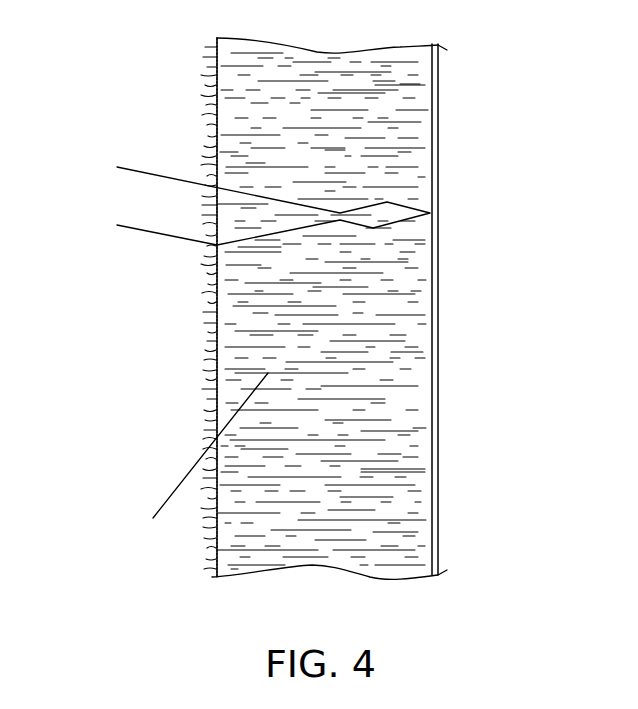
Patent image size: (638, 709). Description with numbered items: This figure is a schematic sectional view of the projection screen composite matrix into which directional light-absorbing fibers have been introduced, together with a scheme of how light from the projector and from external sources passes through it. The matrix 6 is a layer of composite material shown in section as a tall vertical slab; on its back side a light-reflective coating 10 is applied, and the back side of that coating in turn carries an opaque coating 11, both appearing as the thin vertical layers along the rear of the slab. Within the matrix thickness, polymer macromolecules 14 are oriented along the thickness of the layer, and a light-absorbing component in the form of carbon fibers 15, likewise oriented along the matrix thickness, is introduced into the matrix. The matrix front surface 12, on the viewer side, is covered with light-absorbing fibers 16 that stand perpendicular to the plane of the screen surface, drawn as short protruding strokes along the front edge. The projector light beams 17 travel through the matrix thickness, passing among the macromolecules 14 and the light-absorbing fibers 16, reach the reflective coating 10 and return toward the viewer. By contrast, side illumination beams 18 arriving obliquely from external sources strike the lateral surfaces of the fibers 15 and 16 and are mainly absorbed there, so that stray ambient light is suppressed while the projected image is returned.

The matrix 6 is at (340, 566).
The light-reflective coating 10 is at (442, 270).
The opaque coating 11 is at (437, 420).
The matrix front surface 12 is at (216, 282).
The polymer macromolecules 14 is at (297, 160).
The carbon fibers 15 is at (333, 150).
The light-absorbing fibers 16 is at (207, 417).
The projector light beams 17 is at (110, 222).
The side illumination beams 18 is at (153, 518).